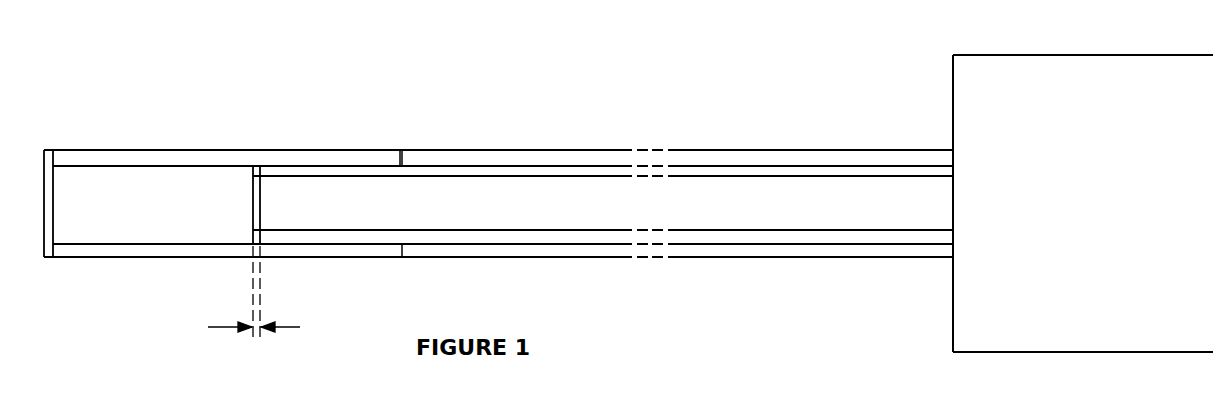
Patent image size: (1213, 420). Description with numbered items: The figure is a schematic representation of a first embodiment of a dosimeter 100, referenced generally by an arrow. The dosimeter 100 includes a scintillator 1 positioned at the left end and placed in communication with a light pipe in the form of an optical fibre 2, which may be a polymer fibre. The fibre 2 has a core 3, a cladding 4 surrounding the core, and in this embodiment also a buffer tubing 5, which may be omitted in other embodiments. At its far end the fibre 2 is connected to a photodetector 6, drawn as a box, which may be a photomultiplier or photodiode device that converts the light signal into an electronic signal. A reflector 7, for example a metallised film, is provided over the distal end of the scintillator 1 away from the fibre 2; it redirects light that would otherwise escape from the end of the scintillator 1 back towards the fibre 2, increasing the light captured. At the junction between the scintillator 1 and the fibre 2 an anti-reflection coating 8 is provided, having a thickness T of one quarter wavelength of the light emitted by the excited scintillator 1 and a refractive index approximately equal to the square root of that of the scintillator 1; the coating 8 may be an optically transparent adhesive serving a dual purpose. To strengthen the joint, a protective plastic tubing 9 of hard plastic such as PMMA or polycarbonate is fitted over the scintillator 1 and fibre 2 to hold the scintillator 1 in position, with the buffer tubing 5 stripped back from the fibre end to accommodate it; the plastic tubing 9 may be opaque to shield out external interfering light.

The dosimeter 100 is at (349, 99).
The scintillator 1 is at (152, 215).
The optical fibre 2 is at (484, 166).
The core 3 is at (463, 216).
The cladding 4 is at (392, 176).
The buffer tubing 5 is at (538, 252).
The photodetector 6 is at (1089, 211).
The reflector 7 is at (44, 150).
The anti-reflection coating 8 is at (262, 185).
The protective plastic tubing 9 is at (120, 258).
The thickness T is at (264, 291).